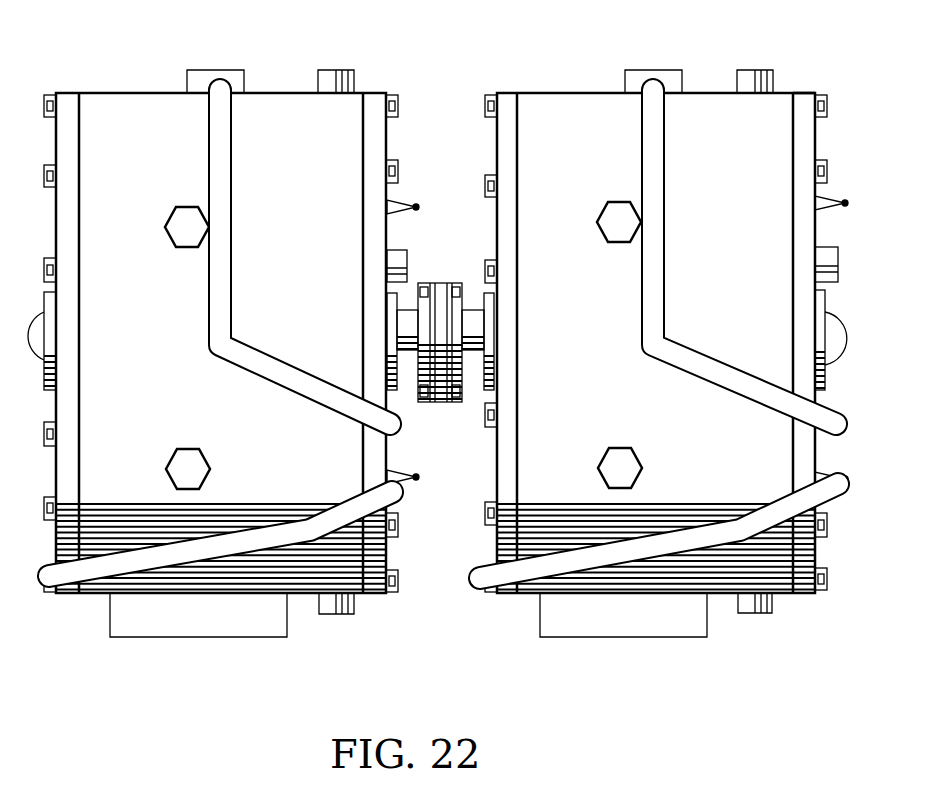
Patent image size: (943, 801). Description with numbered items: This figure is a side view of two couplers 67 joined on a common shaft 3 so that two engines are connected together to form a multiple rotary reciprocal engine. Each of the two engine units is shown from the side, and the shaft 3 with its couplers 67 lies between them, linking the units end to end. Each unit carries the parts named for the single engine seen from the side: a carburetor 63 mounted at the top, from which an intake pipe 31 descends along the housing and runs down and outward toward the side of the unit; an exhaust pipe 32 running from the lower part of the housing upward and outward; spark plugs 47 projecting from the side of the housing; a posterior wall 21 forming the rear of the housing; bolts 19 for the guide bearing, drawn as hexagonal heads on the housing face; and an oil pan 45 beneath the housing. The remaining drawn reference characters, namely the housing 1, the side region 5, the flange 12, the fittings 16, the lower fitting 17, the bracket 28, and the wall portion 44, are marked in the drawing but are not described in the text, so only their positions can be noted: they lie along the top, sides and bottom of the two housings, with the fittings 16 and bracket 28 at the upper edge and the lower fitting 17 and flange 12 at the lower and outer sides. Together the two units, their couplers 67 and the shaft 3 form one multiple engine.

The housing 1 is at (285, 127).
The shaft 3 is at (473, 330).
The side wall 5 is at (377, 112).
The side flange 12 is at (827, 387).
The fitting 16 is at (325, 86).
The bottom fitting 17 is at (352, 600).
The bolts for guide bearing 19 is at (183, 222).
The posterior wall 21 is at (68, 110).
The bracket 28 is at (390, 92).
The intake pipes 31 is at (222, 190).
The exhaust pipes 32 is at (90, 568).
The wall 44 is at (793, 95).
The oil pan 45 is at (258, 610).
The spark plugs 47 is at (393, 203).
The carburetor 63 is at (240, 87).
The coupling 67 is at (438, 407).